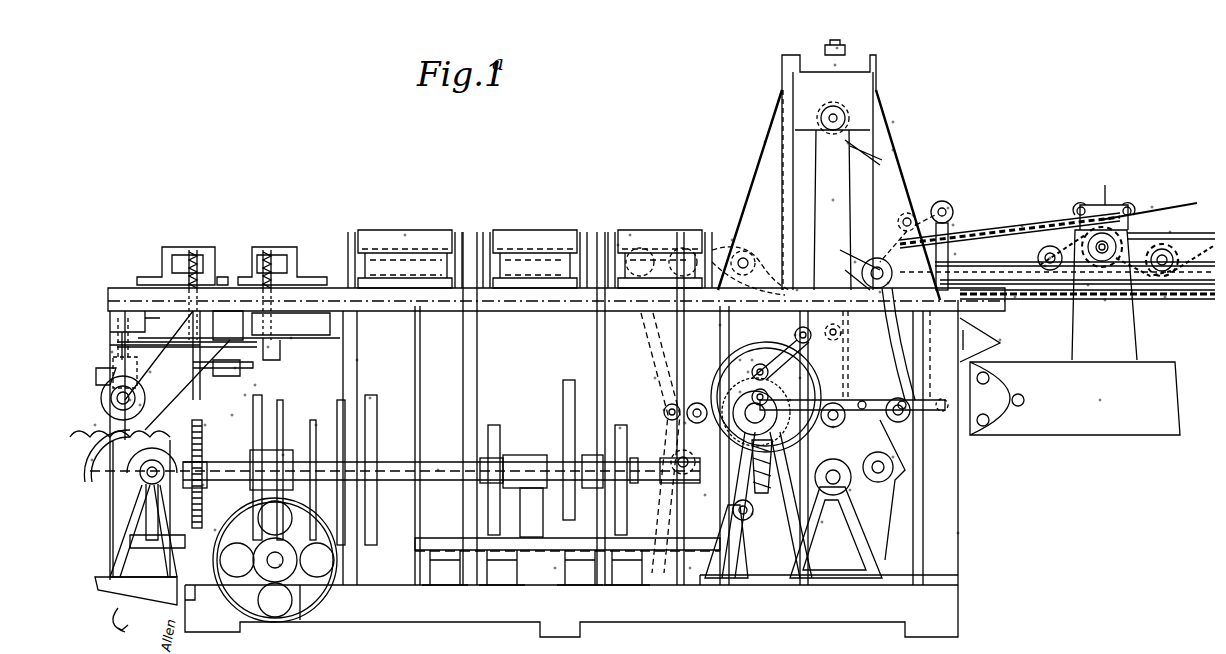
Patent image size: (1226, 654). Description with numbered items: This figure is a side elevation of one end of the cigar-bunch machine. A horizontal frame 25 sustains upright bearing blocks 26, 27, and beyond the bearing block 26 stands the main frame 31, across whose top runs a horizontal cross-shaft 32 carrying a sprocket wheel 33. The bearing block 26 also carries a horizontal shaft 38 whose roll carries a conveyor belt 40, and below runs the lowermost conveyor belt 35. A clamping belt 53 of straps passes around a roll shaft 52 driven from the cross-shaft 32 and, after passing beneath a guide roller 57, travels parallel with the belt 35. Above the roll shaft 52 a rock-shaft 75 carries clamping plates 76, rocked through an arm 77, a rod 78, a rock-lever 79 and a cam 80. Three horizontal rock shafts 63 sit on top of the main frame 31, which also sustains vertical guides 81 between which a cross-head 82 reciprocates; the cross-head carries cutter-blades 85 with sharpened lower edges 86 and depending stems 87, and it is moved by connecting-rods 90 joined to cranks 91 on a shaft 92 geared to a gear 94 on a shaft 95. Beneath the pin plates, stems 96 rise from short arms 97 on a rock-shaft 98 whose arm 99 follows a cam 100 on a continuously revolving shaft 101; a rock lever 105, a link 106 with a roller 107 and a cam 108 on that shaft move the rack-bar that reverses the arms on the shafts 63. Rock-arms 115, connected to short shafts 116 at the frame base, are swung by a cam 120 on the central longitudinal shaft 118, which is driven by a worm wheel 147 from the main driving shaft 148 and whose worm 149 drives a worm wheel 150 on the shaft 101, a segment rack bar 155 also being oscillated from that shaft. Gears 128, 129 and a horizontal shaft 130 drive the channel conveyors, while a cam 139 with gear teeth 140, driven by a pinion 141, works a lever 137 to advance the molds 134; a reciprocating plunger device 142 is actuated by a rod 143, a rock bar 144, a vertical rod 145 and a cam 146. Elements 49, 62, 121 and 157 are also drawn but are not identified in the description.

The depending stems 87 is at (837, 48).
The cross-head 82 is at (822, 80).
The cutter-blades 85 is at (893, 122).
The vertical guides 81 is at (765, 142).
The lower edges 86 is at (848, 143).
The connecting-rods 90 is at (829, 187).
The horizontal rock-shaft 75 is at (913, 215).
The arm 77 is at (948, 208).
The rod 78 is at (953, 225).
The conveyor chain 49 is at (1022, 226).
The clamping belt 53 is at (1152, 207).
The roll shaft 52 is at (955, 254).
The horizontal shaft 38 is at (1050, 258).
The conveyor belt 40 is at (1178, 260).
The guide roller 57 is at (1045, 266).
The lowermost conveyor belt 35 is at (1015, 297).
The ratchet 157 is at (1000, 340).
The sprocket 62 is at (1088, 285).
The bearing block 26 is at (1096, 324).
The horizontal frame 25 is at (1119, 402).
The horizontal cross-shaft 32 is at (880, 292).
The sprocket wheel 33 is at (888, 283).
The stems 96 is at (841, 333).
The clamping plate 76 is at (855, 262).
The short arms 97 is at (796, 298).
The arm 99 is at (752, 360).
The horizontal rock-shaft 98 is at (795, 335).
The rock-arms 115 is at (720, 325).
The cam 100 is at (740, 360).
The cam 80 is at (748, 372).
The roller 107 is at (740, 392).
The rock lever 105 is at (655, 378).
The link 106 is at (664, 410).
The cam 108 is at (685, 423).
The worm wheel 150 is at (800, 378).
The horizontal shaft 101 is at (790, 400).
The cranks 91 is at (830, 435).
The rock-lever 79 is at (905, 408).
The segment rack bar 155 is at (893, 457).
The horizontal shaft 92 is at (850, 490).
The horizontal shaft 95 is at (752, 514).
The gear 94 is at (822, 522).
The main frame 31 is at (958, 533).
The short shafts 116 is at (555, 568).
The central longitudinal shaft 118 is at (438, 470).
The cam 120 is at (505, 422).
The roller boxes 121 is at (405, 235).
The horizontal rock shafts 63 is at (618, 245).
The reciprocating plunger device 142 is at (193, 255).
The molds 134 is at (291, 327).
The bearing block 27 is at (112, 352).
The gear 128 is at (150, 372).
The gear 129 is at (130, 400).
The horizontal shaft 130 is at (140, 405).
The rock bar 144 is at (235, 368).
The rod 143 is at (268, 347).
The vertical rod 145 is at (255, 385).
The gear teeth 140 is at (245, 395).
The cam 139 is at (232, 415).
The cam 146 is at (205, 425).
The pinion 141 is at (203, 485).
The lever 137 is at (215, 530).
The worm wheel 147 is at (283, 455).
The main driving shaft 148 is at (280, 565).
The worm 149 is at (705, 495).